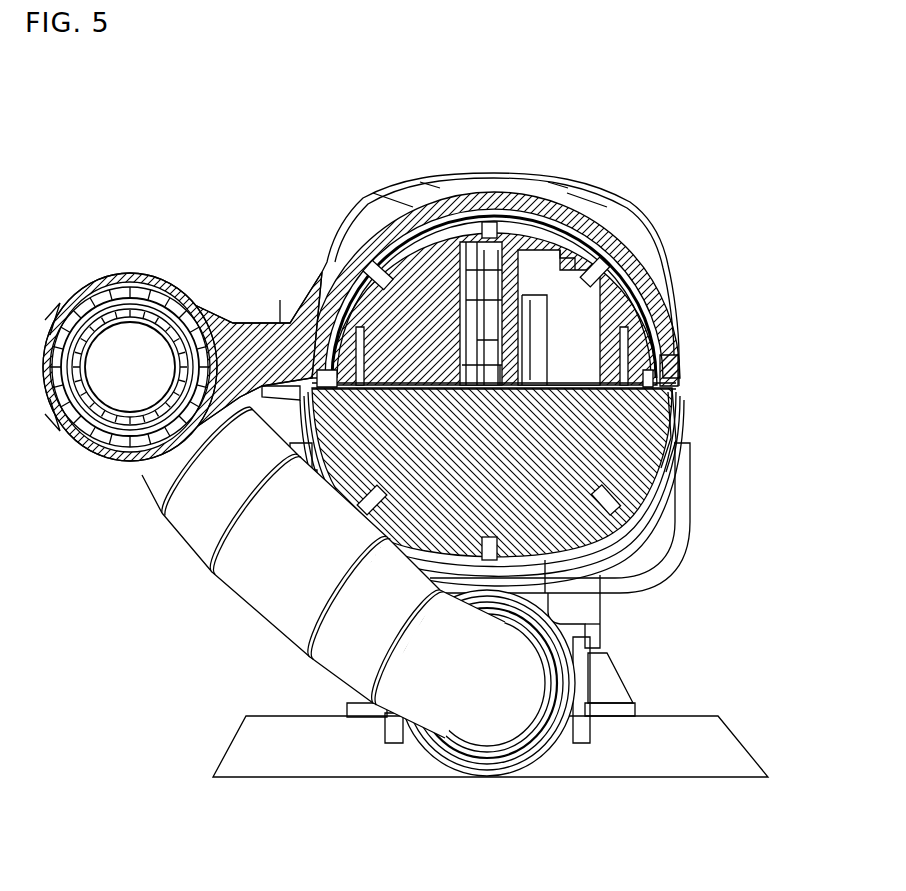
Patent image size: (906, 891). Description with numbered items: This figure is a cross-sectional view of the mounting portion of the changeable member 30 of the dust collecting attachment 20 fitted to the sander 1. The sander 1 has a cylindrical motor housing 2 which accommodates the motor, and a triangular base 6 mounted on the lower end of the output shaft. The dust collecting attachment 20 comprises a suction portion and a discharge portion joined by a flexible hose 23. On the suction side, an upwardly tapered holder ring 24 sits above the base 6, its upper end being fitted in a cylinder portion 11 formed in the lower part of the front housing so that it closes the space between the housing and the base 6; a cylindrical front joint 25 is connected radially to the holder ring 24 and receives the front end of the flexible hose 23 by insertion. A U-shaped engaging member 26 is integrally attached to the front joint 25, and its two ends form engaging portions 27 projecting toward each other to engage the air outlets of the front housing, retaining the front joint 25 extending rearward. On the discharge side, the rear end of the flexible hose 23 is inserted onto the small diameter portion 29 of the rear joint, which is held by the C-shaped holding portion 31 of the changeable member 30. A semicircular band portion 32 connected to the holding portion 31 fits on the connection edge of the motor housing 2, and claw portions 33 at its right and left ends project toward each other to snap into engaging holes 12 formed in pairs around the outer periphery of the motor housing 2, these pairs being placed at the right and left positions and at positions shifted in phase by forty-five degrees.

The sander 1 is at (494, 228).
The motor housing 2 is at (673, 408).
The base 6 is at (704, 738).
The cylinder portion 11 is at (577, 608).
The engaging holes 12 is at (378, 262).
The dust collecting attachment 20 is at (292, 565).
The flexible hose 23 is at (190, 550).
The holder ring 24 is at (600, 672).
The front joint 25 is at (552, 757).
The engaging member 26 is at (688, 523).
The engaging portions 27 is at (303, 443).
The small diameter portion 29 is at (130, 325).
The changeable member 30 is at (290, 322).
The holding portion 31 is at (129, 270).
The band portion 32 is at (520, 180).
The claw portions 33 is at (668, 378).